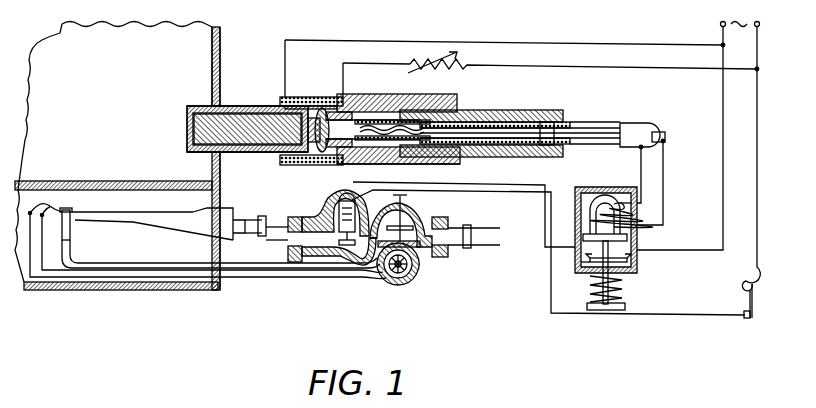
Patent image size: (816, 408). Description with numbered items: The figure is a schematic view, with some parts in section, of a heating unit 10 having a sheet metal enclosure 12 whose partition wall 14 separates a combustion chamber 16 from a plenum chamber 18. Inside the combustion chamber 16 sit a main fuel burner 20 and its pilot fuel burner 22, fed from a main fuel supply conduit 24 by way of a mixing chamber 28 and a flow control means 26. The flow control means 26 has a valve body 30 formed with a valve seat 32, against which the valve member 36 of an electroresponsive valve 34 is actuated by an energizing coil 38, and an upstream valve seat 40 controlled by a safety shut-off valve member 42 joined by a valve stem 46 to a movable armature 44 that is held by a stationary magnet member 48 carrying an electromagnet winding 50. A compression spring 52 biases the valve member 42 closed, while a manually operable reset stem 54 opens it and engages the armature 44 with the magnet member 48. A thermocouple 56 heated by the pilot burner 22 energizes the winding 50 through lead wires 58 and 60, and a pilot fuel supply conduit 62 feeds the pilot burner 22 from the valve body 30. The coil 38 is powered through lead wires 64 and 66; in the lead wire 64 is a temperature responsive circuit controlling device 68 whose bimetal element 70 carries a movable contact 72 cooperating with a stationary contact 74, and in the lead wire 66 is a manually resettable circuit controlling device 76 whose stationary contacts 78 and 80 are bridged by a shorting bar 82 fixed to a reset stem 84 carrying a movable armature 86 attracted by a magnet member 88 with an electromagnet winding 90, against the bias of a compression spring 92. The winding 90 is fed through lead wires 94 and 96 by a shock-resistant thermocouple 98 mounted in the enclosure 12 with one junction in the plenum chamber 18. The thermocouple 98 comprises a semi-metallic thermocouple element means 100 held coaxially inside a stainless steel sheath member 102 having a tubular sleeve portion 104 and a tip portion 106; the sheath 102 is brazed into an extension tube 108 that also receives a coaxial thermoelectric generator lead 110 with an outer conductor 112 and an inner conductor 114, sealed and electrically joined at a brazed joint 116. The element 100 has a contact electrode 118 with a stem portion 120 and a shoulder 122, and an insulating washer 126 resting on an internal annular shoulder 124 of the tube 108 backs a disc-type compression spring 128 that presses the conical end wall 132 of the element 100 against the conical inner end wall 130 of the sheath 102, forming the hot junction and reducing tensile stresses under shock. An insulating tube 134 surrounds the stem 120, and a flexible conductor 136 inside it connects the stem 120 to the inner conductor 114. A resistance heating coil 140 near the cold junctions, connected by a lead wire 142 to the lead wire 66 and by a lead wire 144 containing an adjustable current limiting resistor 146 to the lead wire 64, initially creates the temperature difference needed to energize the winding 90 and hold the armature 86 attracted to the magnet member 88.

The heating unit 10 is at (229, 42).
The sheet metal enclosure 12 is at (220, 65).
The partition wall 14 is at (62, 183).
The combustion chamber 16 is at (96, 260).
The plenum chamber 18 is at (74, 103).
The main fuel burner 20 is at (137, 226).
The pilot fuel burner 22 is at (72, 212).
The main fuel supply conduit 24 is at (262, 236).
The flow control means 26 is at (440, 282).
The mixing chamber 28 is at (233, 212).
The valve body 30 is at (312, 220).
The valve seat 32 is at (333, 208).
The electroresponsive valve 34 is at (352, 198).
The valve member 36 is at (352, 265).
The energizing coil 38 is at (350, 198).
The valve seat 40 is at (436, 218).
The valve member 42 is at (421, 263).
The movable armature 44 is at (410, 281).
The valve stem 46 is at (404, 280).
The stationary magnet member 48 is at (398, 284).
The electromagnet winding 50 is at (388, 281).
The compression spring 52 is at (380, 271).
The reset stem 54 is at (405, 200).
The thermocouple 56 is at (42, 213).
The lead wire 58 is at (222, 292).
The lead wire 60 is at (238, 278).
The pilot fuel supply conduit 62 is at (243, 271).
The lead wire 64 is at (754, 206).
The lead wire 66 is at (545, 214).
The temperature responsive circuit controlling device 68 is at (756, 308).
The bimetal element 70 is at (758, 268).
The movable contact 72 is at (750, 320).
The stationary contact 74 is at (745, 318).
The manually resettable circuit controlling device 76 is at (645, 236).
The stationary contact 78 is at (632, 266).
The stationary contact 80 is at (590, 258).
The shorting bar 82 is at (592, 288).
The reset stem 84 is at (615, 289).
The movable armature 86 is at (583, 236).
The magnet member 88 is at (583, 188).
The electromagnet winding 90 is at (607, 196).
The compression spring 92 is at (588, 308).
The lead wire 94 is at (641, 173).
The lead wire 96 is at (690, 170).
The thermocouple 98 is at (490, 98).
The thermocouple element means 100 is at (252, 160).
The sheath member 102 is at (221, 104).
The tubular sleeve portion 104 is at (242, 100).
The tip portion 106 is at (190, 143).
The extension tube 108 is at (410, 100).
The thermoelectric generator lead 110 is at (655, 118).
The outer conductor 112 is at (573, 145).
The inner conductor 114 is at (565, 128).
The brazed joint 116 is at (548, 122).
The contact electrode 118 is at (305, 97).
The stem portion 120 is at (395, 100).
The shoulder 122 is at (320, 108).
The internal annular shoulder 124 is at (360, 120).
The insulating washer 126 is at (312, 168).
The compression spring 128 is at (343, 95).
The conical inner end wall 130 is at (190, 118).
The conical end wall 132 is at (195, 125).
The insulating tube 134 is at (440, 170).
The flexible conductor 136 is at (458, 110).
The heating coil 140 is at (288, 96).
The lead wire 142 is at (575, 40).
The lead wire 144 is at (345, 64).
The current limiting resistor 146 is at (470, 60).